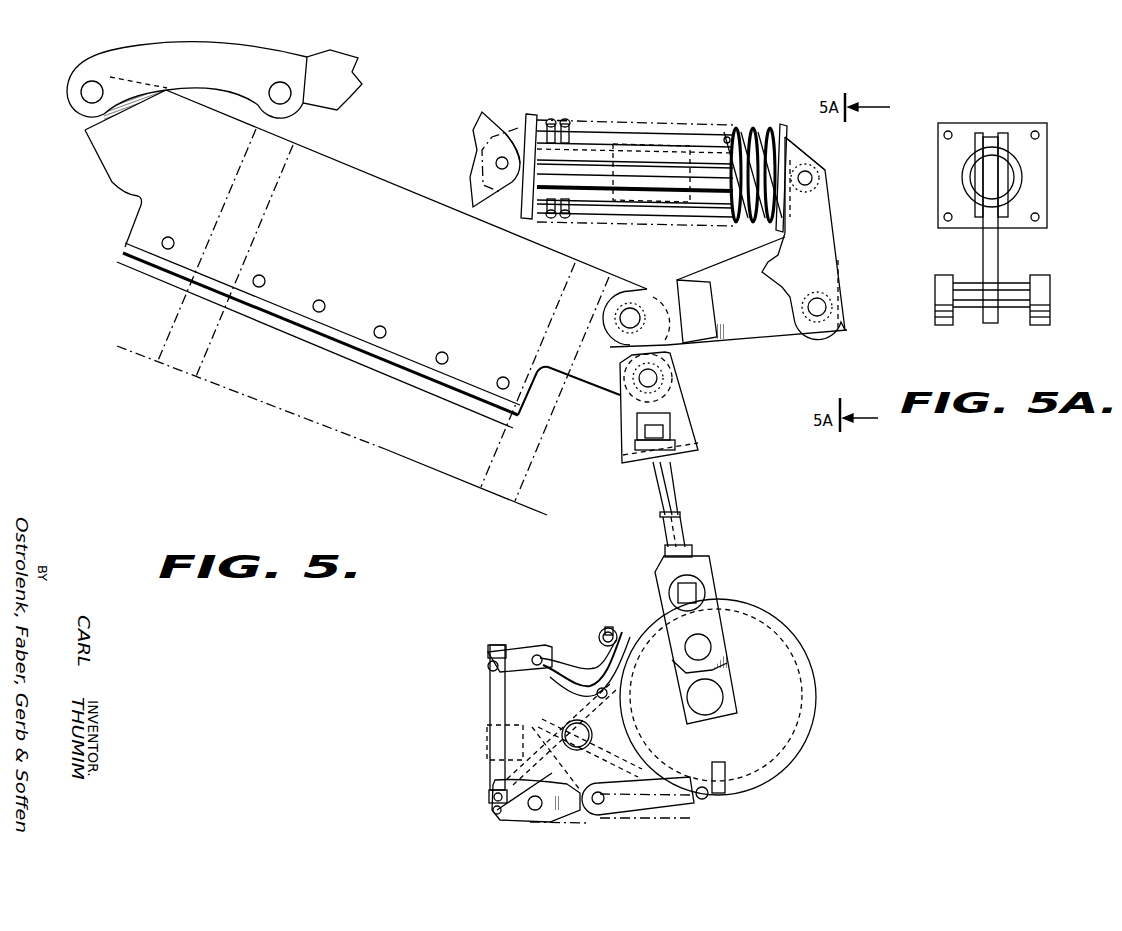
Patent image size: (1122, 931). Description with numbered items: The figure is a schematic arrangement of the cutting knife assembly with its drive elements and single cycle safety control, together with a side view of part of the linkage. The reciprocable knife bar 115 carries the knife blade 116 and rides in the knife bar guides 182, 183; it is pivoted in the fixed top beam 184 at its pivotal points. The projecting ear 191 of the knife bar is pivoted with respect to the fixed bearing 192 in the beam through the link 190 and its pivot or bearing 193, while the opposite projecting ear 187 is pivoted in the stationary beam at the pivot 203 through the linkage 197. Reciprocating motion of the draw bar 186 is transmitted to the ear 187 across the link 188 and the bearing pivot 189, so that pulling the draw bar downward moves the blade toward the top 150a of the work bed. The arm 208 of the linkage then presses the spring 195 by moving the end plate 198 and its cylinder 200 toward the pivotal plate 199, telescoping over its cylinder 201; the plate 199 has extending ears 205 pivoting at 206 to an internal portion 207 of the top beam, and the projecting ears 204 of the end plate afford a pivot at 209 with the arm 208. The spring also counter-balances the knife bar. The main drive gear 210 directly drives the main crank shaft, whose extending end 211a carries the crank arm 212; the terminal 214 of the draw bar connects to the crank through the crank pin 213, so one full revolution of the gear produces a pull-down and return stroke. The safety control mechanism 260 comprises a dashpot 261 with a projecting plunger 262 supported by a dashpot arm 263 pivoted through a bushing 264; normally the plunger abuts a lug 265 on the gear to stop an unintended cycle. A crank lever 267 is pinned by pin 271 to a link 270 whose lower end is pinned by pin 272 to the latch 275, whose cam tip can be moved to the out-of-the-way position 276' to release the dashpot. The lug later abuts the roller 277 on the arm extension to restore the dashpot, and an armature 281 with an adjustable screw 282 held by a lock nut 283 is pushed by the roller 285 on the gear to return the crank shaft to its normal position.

In FIG. 5, the knife bar 115 is at (366, 239).
In FIG. 5, the knife blade 116 is at (420, 378).
In FIG. 5, the guide support 182 is at (167, 358).
In FIG. 5, the guide support 183 is at (535, 442).
In FIG. 5, the top of work bed 150a is at (461, 478).
In FIG. 5, the top beam 184 is at (338, 98).
In FIG. 5A, the top beam 184 is at (937, 325).
In FIG. 5, the draw bar 186 is at (655, 493).
In FIG. 5, the projecting ear 187 is at (605, 377).
In FIG. 5, the link 188 is at (682, 410).
In FIG. 5, the bearing pivot 189 is at (656, 378).
In FIG. 5, the link 190 is at (133, 62).
In FIG. 5, the projecting ear 191 is at (107, 160).
In FIG. 5, the fixed bearing 192 is at (282, 91).
In FIG. 5, the pivot bearing 193 is at (81, 91).
In FIG. 5, the spring 195 is at (750, 128).
In FIG. 5, the linkage 197 is at (758, 342).
In FIG. 5A, the linkage 197 is at (1012, 252).
In FIG. 5, the end plate 198 is at (782, 128).
In FIG. 5A, the end plate 198 is at (1048, 150).
In FIG. 5, the pivotal plate 199 is at (532, 127).
In FIG. 5, the cylinder 200 is at (717, 150).
In FIG. 5, the cylinder 201 is at (585, 150).
In FIG. 5, the pivot 203 is at (819, 316).
In FIG. 5A, the pivot 203 is at (1012, 300).
In FIG. 5, the projecting ears 204 is at (798, 150).
In FIG. 5, the extending ears 205 is at (517, 132).
In FIG. 5, the pivot 206 is at (498, 165).
In FIG. 5, the internal portion of top beam 207 is at (477, 123).
In FIG. 5, the arm 208 is at (825, 217).
In FIG. 5A, the arm 208 is at (983, 140).
In FIG. 5, the pivot 209 is at (810, 178).
In FIG. 5A, the pivot 209 is at (1000, 175).
In FIG. 5, the main drive gear 210 is at (805, 735).
In FIG. 5, the extending end of crank shaft 211a is at (707, 700).
In FIG. 5, the crank arm 212 is at (730, 673).
In FIG. 5, the crank pin 213 is at (707, 645).
In FIG. 5, the terminal of draw bar 214 is at (706, 587).
In FIG. 5, the safety control mechanism 260 is at (470, 729).
In FIG. 5, the dashpot 261 is at (675, 778).
In FIG. 5, the plunger 262 is at (704, 799).
In FIG. 5, the dashpot arm 263 is at (620, 752).
In FIG. 5, the bushing 264 is at (568, 723).
In FIG. 5, the lug 265 is at (727, 762).
In FIG. 5, the crank lever 267 is at (513, 650).
In FIG. 5, the link 270 is at (489, 695).
In FIG. 5, the pin 271 is at (488, 665).
In FIG. 5, the pin 272 is at (494, 809).
In FIG. 5, the latch 275 is at (537, 793).
In FIG. 5, the out-of-the-way position of cam tip 276' is at (587, 785).
In FIG. 5, the roller 277 is at (608, 694).
In FIG. 5, the armature 281 is at (617, 635).
In FIG. 5, the screw 282 is at (605, 629).
In FIG. 5, the lock nut 283 is at (610, 626).
In FIG. 5, the roller 285 is at (792, 640).